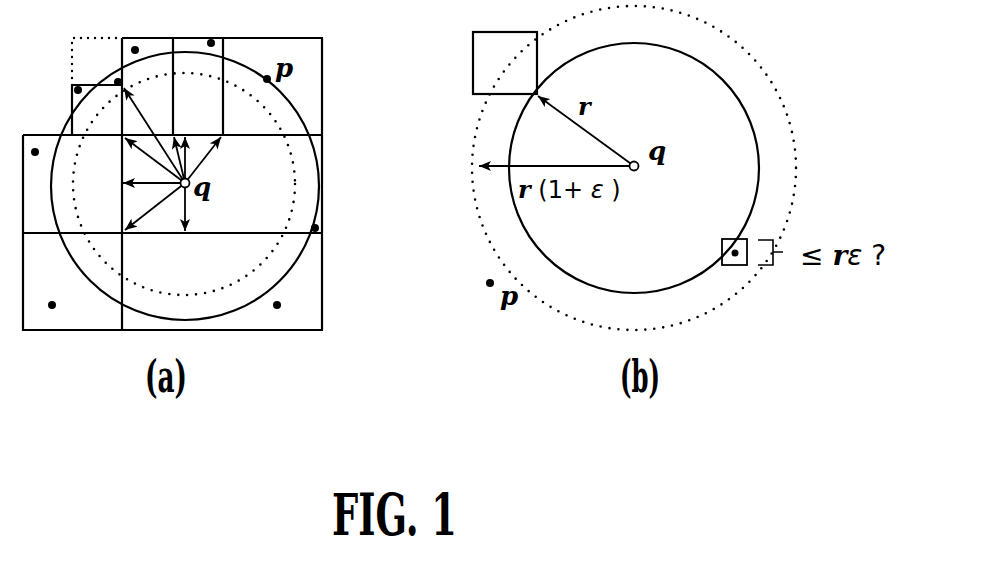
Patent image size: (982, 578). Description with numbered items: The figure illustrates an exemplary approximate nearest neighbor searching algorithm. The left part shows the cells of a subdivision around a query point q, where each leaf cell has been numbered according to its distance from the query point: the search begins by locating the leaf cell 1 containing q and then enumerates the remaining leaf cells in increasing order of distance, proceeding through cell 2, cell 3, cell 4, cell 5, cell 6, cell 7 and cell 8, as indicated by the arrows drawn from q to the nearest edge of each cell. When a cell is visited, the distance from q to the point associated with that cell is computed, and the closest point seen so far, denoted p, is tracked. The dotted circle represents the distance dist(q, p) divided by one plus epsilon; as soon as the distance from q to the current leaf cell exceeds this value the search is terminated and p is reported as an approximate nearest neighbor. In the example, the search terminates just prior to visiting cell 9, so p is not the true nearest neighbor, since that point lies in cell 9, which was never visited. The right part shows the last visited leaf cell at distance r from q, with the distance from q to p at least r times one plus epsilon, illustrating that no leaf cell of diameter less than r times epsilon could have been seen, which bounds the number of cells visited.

The cell 1 is at (222, 184).
The cell 2 is at (222, 281).
The cell 3 is at (198, 86).
The cell 4 is at (147, 86).
The cell 5 is at (72, 184).
The cell 6 is at (272, 86).
The cell 7 is at (72, 281).
The cell 8 is at (97, 110).
The cell 9 is at (97, 61).